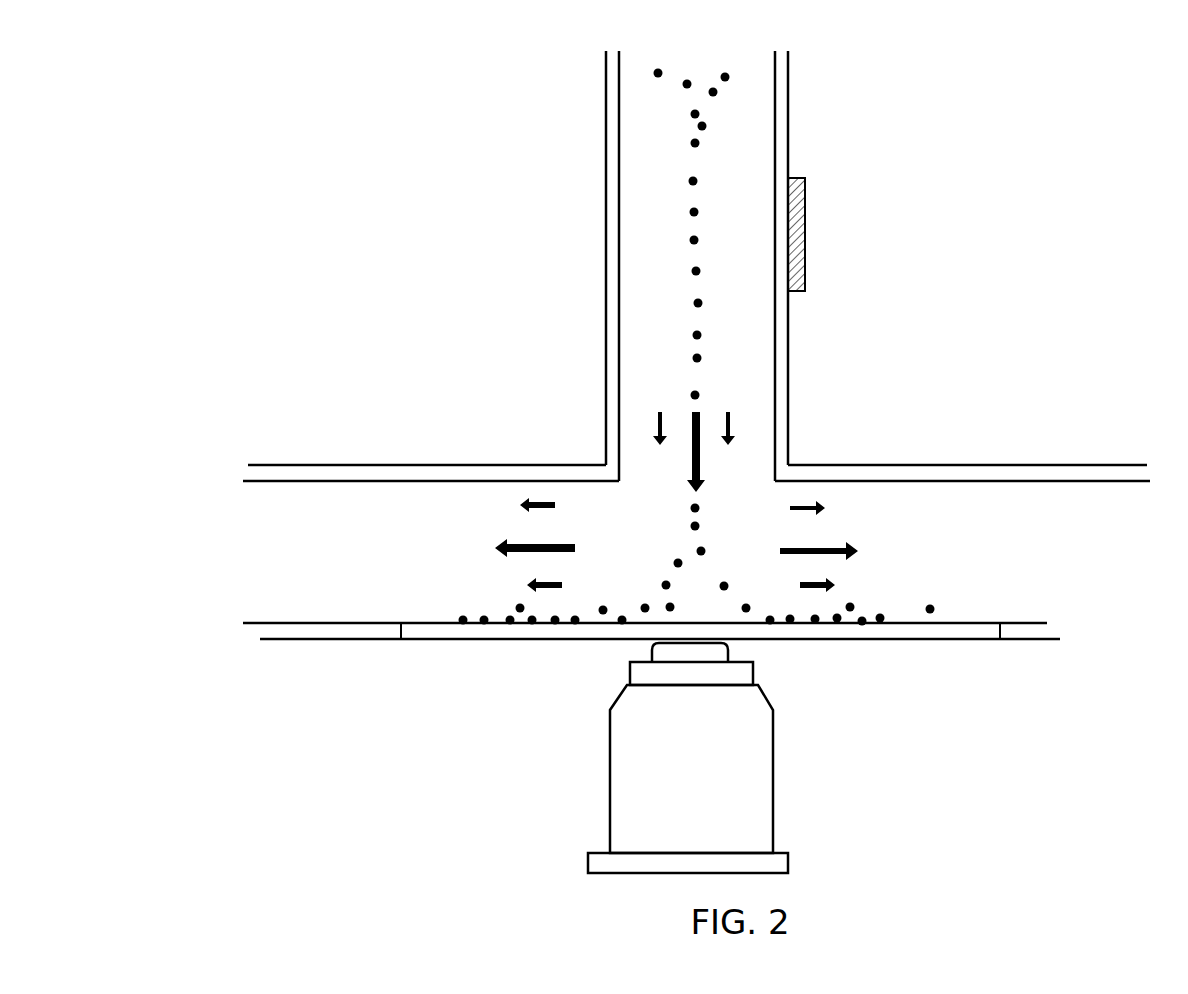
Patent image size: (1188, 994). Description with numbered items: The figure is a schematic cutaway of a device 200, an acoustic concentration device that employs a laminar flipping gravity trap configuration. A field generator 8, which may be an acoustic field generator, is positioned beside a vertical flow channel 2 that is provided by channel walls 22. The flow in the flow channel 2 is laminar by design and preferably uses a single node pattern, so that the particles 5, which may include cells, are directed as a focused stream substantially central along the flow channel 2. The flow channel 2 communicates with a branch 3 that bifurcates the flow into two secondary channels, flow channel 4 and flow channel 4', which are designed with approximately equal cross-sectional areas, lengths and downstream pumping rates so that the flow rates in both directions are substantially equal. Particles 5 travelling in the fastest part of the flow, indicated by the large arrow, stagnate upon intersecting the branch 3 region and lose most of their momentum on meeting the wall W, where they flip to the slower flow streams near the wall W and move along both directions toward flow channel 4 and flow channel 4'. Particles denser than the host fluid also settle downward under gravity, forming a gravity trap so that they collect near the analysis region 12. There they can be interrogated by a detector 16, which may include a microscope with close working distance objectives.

The device 200 is at (486, 62).
The flow channel 2 is at (640, 315).
The channel walls 22 is at (605, 390).
The particles 5 is at (712, 357).
The branch 3 is at (636, 475).
The field generator 8 is at (800, 210).
The flow channel 4 is at (253, 416).
The flow channel 4' is at (1087, 406).
The wall W is at (694, 610).
The analysis region 12 is at (566, 635).
The detector 16 is at (688, 758).